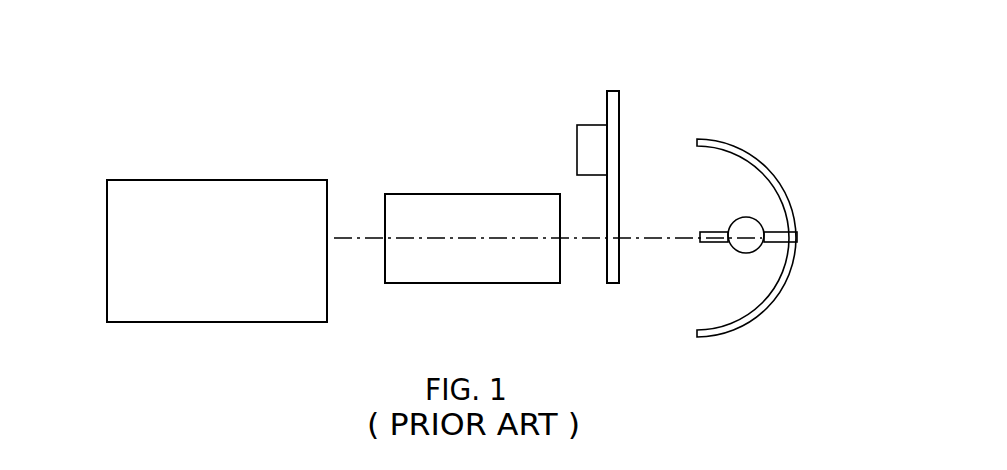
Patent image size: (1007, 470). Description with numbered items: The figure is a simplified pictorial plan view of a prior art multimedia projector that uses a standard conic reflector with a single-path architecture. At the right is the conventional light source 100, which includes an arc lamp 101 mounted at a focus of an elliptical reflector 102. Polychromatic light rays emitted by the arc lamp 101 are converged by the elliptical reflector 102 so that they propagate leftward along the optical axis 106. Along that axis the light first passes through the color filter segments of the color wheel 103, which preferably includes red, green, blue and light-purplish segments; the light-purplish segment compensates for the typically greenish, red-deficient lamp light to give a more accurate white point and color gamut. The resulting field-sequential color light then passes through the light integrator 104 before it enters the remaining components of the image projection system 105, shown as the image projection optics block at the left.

The light source 100 is at (814, 128).
The arc lamp 101 is at (747, 243).
The elliptical reflector 102 is at (763, 292).
The color wheel 103 is at (620, 97).
The light integrator 104 is at (450, 203).
The image projection system 105 is at (120, 180).
The optical axis 106 is at (667, 240).